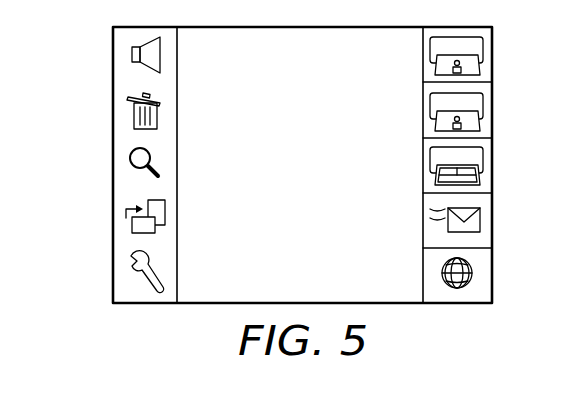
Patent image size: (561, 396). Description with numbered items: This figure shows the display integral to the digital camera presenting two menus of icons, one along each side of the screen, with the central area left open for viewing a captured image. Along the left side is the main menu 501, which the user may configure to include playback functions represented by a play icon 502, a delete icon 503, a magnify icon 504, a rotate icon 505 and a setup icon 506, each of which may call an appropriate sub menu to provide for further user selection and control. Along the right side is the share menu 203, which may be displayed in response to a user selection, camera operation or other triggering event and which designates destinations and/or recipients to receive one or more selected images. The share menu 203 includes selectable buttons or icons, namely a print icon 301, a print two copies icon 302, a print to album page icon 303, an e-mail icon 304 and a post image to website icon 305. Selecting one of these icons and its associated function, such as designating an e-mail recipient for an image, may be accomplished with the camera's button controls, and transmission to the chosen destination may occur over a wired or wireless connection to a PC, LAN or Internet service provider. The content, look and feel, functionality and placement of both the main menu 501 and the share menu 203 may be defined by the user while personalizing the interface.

The main menu 501 is at (141, 320).
The menu 203 is at (461, 319).
The play icon 502 is at (132, 53).
The delete icon 503 is at (134, 111).
The magnify icon 504 is at (130, 160).
The rotate icon 505 is at (132, 226).
The setup icon 506 is at (131, 268).
The print icon 301 is at (484, 50).
The print "two copies" icon 302 is at (484, 106).
The print to album page icon 303 is at (484, 160).
The e-mail icon 304 is at (481, 222).
The post image to website icon 305 is at (473, 270).